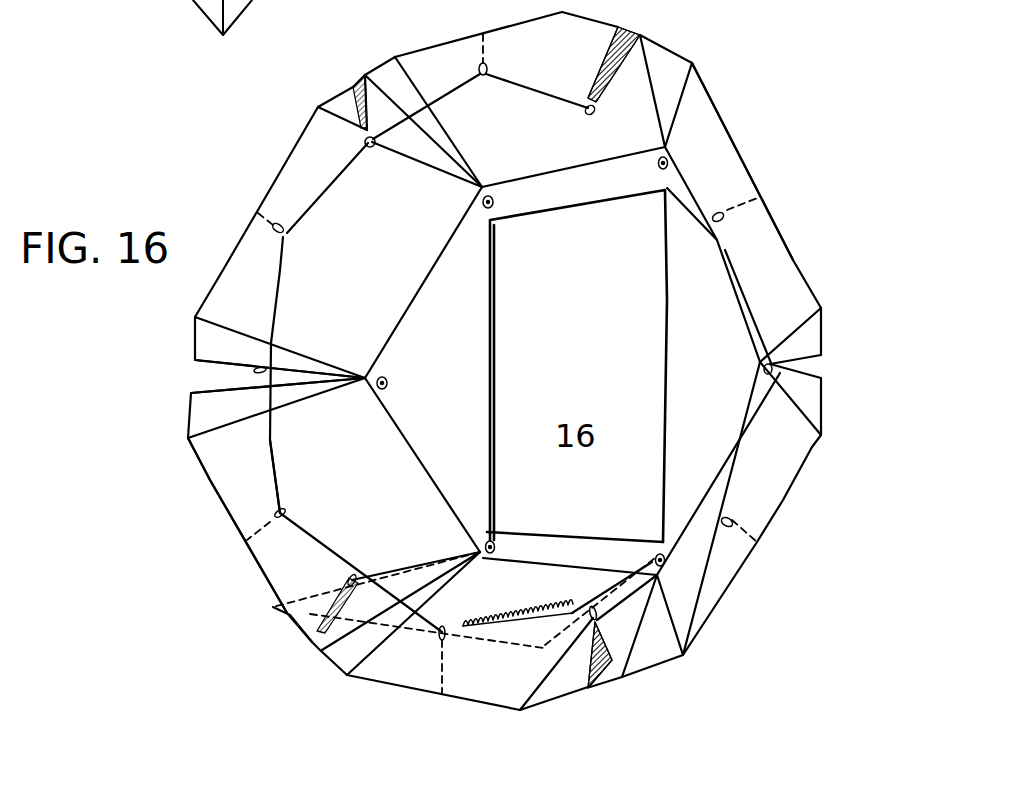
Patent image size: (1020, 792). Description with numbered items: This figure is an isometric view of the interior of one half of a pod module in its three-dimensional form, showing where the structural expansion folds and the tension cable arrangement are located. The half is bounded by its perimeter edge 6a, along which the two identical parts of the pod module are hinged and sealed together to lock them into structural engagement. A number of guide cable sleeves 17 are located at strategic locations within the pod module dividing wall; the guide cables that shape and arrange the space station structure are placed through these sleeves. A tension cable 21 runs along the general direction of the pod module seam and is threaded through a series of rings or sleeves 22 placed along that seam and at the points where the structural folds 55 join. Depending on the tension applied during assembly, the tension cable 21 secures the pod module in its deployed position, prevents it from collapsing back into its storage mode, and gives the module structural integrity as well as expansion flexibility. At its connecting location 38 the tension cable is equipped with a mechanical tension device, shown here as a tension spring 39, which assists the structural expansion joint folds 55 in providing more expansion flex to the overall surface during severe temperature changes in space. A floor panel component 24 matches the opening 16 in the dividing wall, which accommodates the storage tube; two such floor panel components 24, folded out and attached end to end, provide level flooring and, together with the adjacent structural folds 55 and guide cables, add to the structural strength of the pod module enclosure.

The opening 16 is at (577, 366).
The guide cable sleeve 17 is at (390, 382).
The perimeter edge 6a is at (728, 135).
The structural fold 55 is at (626, 38).
The ring or sleeve 22 is at (195, 0).
The tension cable 21 is at (273, 443).
The floor panel component 24 is at (287, 613).
The connecting location 38 is at (460, 628).
The tension spring 39 is at (587, 690).